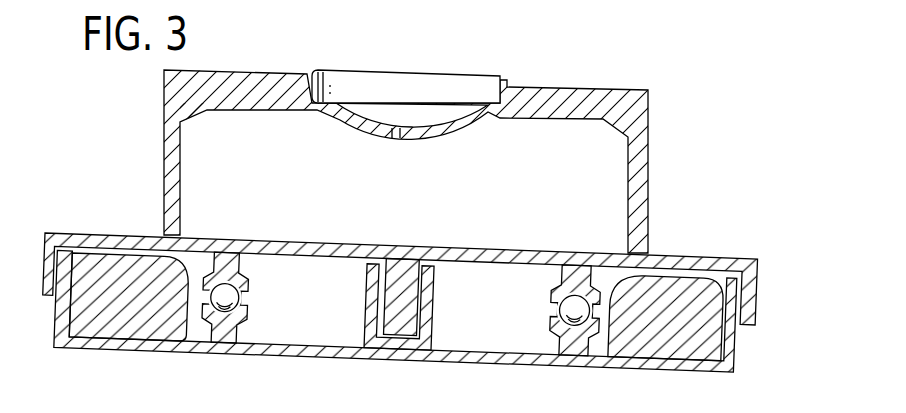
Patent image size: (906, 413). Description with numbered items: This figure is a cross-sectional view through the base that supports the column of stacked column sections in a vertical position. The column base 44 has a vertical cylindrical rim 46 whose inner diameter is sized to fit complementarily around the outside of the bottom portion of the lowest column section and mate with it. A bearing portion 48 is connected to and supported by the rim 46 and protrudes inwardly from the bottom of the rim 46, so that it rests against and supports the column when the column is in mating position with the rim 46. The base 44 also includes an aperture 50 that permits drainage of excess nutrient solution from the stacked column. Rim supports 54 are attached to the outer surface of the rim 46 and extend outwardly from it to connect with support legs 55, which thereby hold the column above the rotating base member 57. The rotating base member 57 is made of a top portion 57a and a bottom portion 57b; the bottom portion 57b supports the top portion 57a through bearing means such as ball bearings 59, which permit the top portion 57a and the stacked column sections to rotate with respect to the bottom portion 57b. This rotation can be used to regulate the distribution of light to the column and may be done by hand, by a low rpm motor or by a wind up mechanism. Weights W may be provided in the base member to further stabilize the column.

The column base 44 is at (446, 154).
The vertical cylindrical rim 46 is at (487, 85).
The bearing portion 48 is at (330, 98).
The aperture 50 is at (408, 135).
The rim supports 54 is at (572, 102).
The support legs 55 is at (645, 157).
The rotating base member 57 is at (428, 316).
The top portion 57a is at (400, 290).
The bottom portion 57b is at (395, 311).
The ball bearings 59 is at (401, 304).
The weights W is at (396, 307).